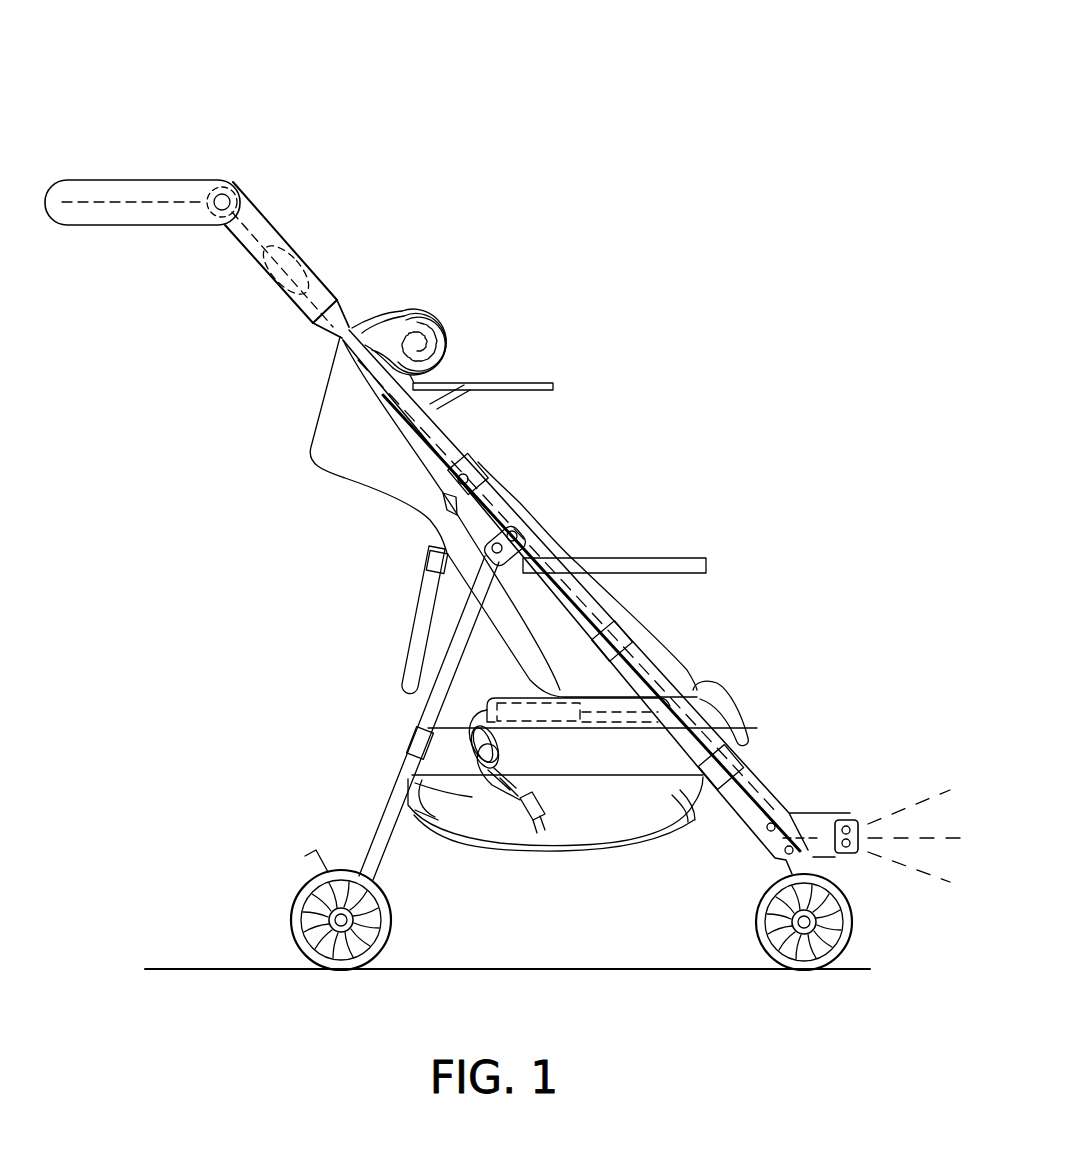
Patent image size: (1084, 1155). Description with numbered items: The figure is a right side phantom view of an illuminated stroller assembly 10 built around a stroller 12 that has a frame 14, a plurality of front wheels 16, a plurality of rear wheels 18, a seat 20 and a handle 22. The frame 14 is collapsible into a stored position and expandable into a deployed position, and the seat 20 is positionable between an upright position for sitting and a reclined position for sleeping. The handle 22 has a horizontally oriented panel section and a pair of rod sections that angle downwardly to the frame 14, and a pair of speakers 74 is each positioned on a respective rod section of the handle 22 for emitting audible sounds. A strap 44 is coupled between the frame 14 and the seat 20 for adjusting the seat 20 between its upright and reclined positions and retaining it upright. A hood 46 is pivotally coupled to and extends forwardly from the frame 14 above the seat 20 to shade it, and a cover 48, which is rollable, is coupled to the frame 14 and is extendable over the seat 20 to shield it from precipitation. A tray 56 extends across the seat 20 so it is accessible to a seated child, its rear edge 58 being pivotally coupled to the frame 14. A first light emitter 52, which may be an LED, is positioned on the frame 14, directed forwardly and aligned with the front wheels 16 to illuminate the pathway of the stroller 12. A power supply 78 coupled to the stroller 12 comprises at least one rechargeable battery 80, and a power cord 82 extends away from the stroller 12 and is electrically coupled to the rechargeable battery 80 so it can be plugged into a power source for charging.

The illuminated stroller assembly 10 is at (507, 145).
The stroller 12 is at (612, 510).
The frame 14 is at (457, 626).
The front wheels 16 is at (853, 923).
The rear wheels 18 is at (298, 906).
The seat 20 is at (370, 488).
The handle 22 is at (122, 180).
The strap 44 is at (410, 654).
The hood 46 is at (510, 383).
The cover 48 is at (417, 328).
The first light emitter 52 is at (851, 820).
The tray 56 is at (712, 558).
The rear edge 58 is at (508, 538).
The speakers 74 is at (287, 262).
The power supply 78 is at (573, 725).
The rechargeable battery 80 is at (565, 723).
The power cord 82 is at (495, 807).